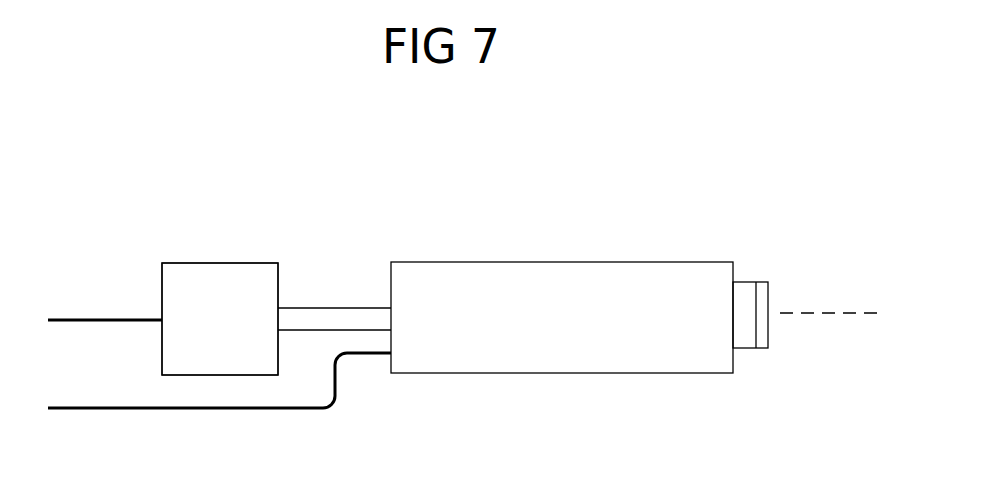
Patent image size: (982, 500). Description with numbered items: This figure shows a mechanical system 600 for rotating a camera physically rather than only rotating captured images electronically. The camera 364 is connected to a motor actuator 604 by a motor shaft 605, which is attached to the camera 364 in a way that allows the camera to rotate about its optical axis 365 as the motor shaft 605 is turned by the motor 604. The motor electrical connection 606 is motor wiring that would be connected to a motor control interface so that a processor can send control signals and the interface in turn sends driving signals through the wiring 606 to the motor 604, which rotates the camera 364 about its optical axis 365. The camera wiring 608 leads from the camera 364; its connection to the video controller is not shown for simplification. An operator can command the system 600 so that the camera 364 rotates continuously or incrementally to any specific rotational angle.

The mechanical system 600 is at (247, 173).
The motor actuator 604 is at (193, 348).
The motor shaft 605 is at (328, 302).
The motor electrical connection 606 is at (82, 308).
The camera wiring 608 is at (338, 399).
The camera 364 is at (556, 337).
The optical axis 365 is at (812, 302).